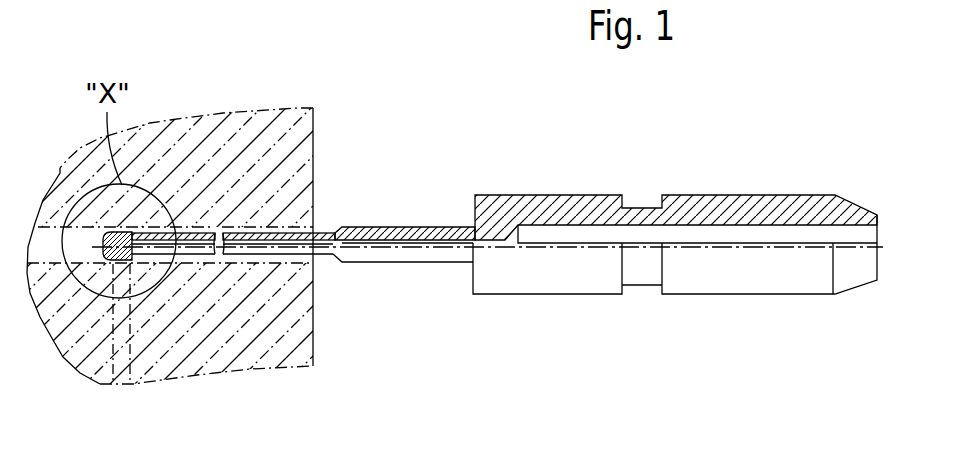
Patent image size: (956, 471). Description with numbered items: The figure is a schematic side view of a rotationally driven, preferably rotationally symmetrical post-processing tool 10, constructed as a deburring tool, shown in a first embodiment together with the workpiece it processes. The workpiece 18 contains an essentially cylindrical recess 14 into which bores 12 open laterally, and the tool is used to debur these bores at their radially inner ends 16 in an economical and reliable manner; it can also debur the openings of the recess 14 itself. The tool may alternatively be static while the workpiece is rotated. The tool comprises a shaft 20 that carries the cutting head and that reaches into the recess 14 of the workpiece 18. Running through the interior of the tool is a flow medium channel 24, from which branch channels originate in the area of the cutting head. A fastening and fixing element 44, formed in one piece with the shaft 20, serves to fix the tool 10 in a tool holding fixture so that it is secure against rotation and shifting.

The post-processing tool 10 is at (552, 300).
The bore 12 is at (123, 340).
The cylindrical recess 14 is at (248, 230).
The radially inner end 16 is at (113, 270).
The workpiece 18 is at (267, 122).
The shaft 20 is at (397, 227).
The interior flow medium channel 24 is at (430, 247).
The fastening and fixing element 44 is at (592, 200).